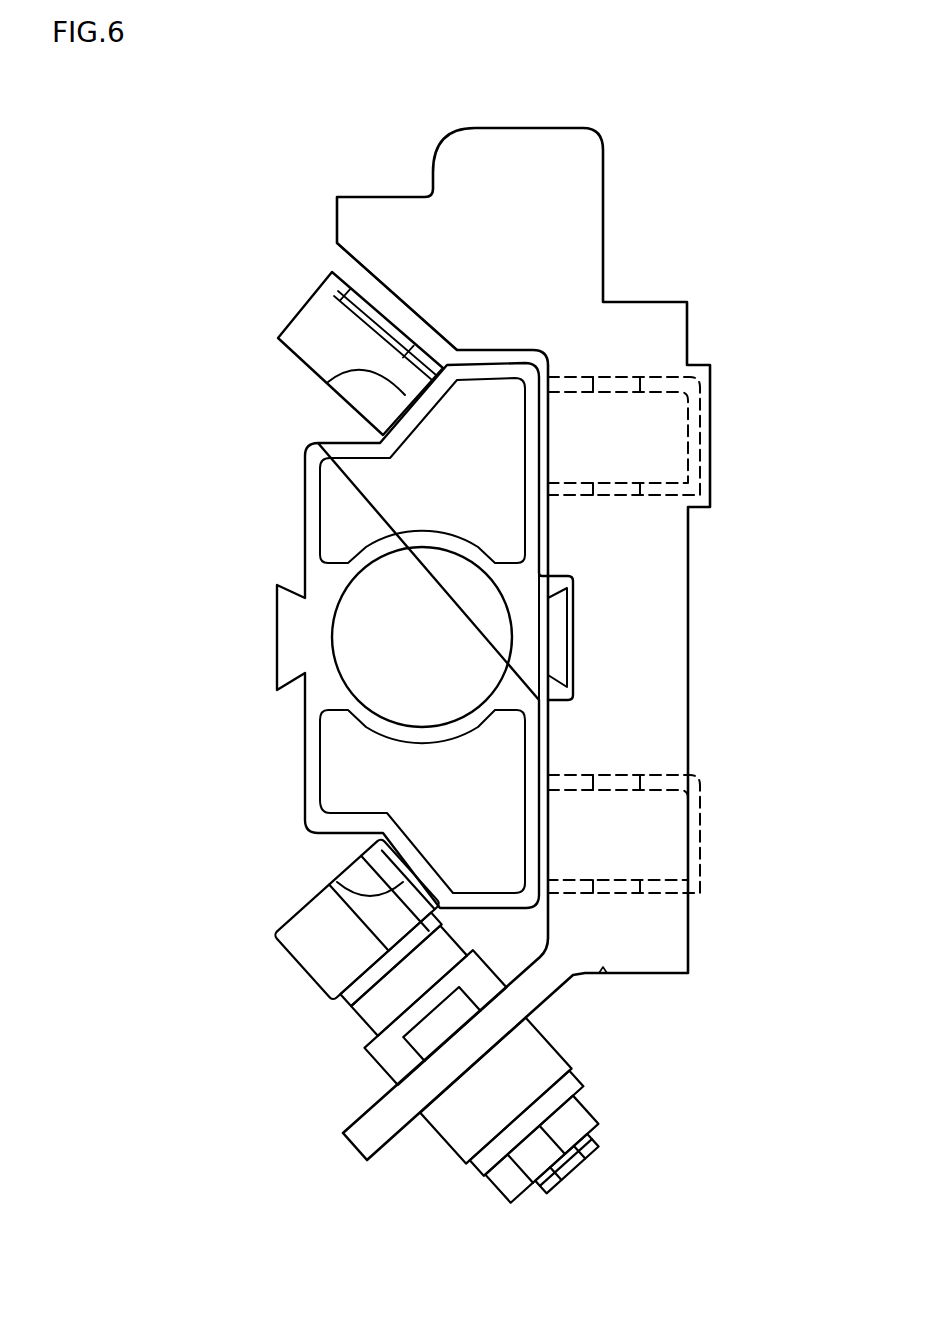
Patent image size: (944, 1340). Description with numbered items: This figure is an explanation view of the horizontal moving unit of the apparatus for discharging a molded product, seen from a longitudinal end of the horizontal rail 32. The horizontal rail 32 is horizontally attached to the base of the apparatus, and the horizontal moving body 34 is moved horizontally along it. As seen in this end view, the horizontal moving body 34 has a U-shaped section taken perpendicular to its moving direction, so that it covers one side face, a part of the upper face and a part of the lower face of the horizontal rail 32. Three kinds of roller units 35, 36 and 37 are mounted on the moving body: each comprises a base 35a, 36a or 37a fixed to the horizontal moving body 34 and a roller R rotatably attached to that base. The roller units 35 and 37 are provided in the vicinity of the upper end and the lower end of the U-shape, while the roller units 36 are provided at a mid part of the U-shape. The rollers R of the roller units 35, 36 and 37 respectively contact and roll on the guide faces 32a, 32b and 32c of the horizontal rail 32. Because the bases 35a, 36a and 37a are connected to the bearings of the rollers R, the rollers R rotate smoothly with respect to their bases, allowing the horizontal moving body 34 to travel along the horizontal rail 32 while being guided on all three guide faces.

The horizontal rail 32 is at (302, 637).
The guide face 32a is at (332, 392).
The guide face 32b is at (540, 425).
The guide face 32c is at (387, 895).
The horizontal moving body 34 is at (663, 634).
The roller unit 35 is at (492, 548).
The base 35a is at (380, 298).
The roller unit 36 is at (695, 636).
The base 36a is at (650, 490).
The roller unit 37 is at (398, 1029).
The base 37a is at (345, 1012).
The roller R is at (308, 318).